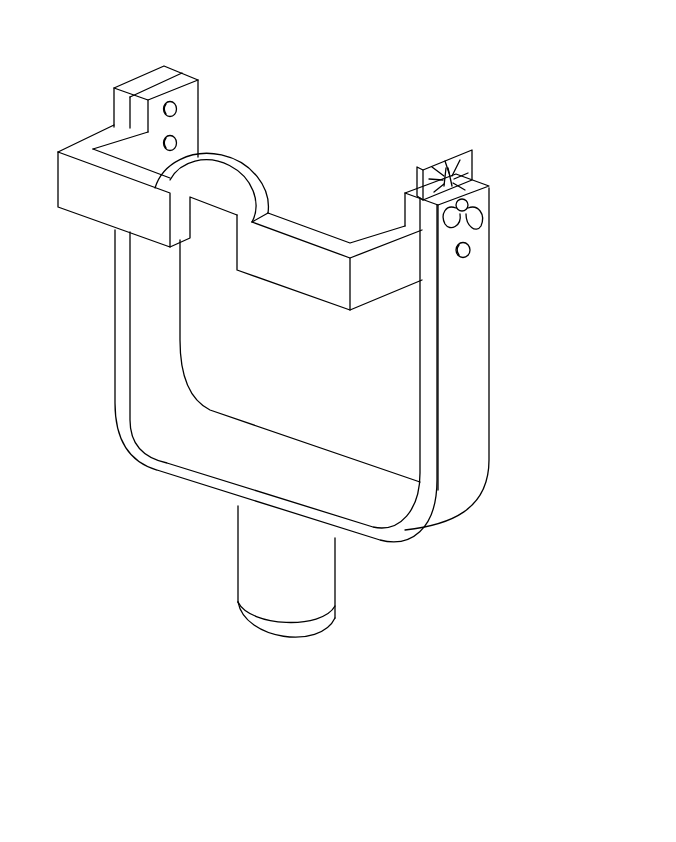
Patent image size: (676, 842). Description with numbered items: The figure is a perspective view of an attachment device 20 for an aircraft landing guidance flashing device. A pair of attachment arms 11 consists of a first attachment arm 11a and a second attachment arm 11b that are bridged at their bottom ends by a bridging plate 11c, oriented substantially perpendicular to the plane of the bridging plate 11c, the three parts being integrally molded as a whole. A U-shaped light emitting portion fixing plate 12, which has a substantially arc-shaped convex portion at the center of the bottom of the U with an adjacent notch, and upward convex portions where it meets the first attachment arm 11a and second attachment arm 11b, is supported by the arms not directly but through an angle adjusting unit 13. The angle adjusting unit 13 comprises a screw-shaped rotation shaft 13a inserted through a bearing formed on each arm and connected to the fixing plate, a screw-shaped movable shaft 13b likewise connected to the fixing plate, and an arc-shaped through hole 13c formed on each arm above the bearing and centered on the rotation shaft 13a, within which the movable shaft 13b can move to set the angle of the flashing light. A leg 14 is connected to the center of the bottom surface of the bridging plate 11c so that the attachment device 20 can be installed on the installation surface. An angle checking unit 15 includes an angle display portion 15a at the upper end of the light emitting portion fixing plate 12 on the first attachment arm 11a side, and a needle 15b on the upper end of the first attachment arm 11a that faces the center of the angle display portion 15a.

The attachment device 20 is at (514, 47).
The pair of attachment arms 11 is at (588, 342).
The first attachment arm 11a is at (465, 358).
The second attachment arm 11b is at (155, 308).
The bridging plate 11c is at (297, 478).
The light emitting portion fixing plate 12 is at (390, 270).
The angle adjusting unit 13 is at (588, 172).
The rotation shaft 13a is at (178, 143).
The movable shaft 13b is at (178, 108).
The hole 13c is at (483, 215).
The leg 14 is at (313, 578).
The angle checking unit 15 is at (588, 101).
The angle display portion 15a is at (476, 152).
The needle 15b is at (487, 166).